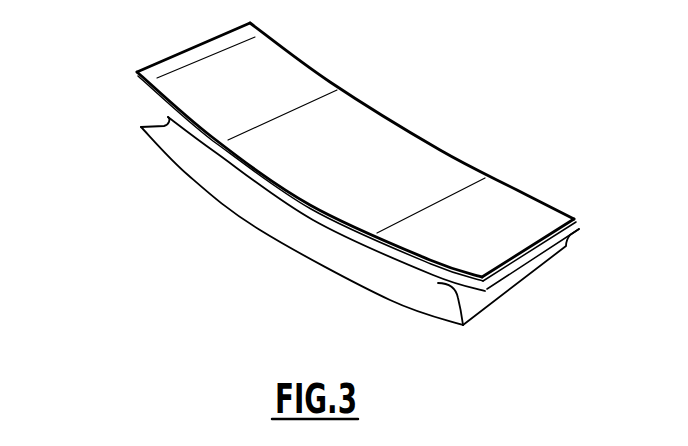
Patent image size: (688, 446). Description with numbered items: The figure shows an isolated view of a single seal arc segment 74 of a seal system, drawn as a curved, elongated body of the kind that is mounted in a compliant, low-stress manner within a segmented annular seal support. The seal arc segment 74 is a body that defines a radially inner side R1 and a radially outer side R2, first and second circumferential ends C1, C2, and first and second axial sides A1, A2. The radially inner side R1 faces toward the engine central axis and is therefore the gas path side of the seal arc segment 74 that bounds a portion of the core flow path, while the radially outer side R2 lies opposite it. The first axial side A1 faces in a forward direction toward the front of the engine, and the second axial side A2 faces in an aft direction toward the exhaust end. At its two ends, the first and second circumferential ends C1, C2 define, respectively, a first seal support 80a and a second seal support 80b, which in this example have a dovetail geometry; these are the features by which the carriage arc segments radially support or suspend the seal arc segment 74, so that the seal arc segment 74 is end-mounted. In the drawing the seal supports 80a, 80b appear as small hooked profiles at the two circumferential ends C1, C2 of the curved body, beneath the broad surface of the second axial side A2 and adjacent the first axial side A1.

The seal arc segment 74 is at (317, 196).
The first axial side A1 is at (302, 248).
The second axial side A2 is at (359, 150).
The first circumferential end C1 is at (533, 294).
The second circumferential end C2 is at (116, 78).
The radially inner side R1 is at (527, 197).
The radially outer side R2 is at (205, 218).
The first seal support 80a is at (467, 306).
The second seal support 80b is at (148, 115).